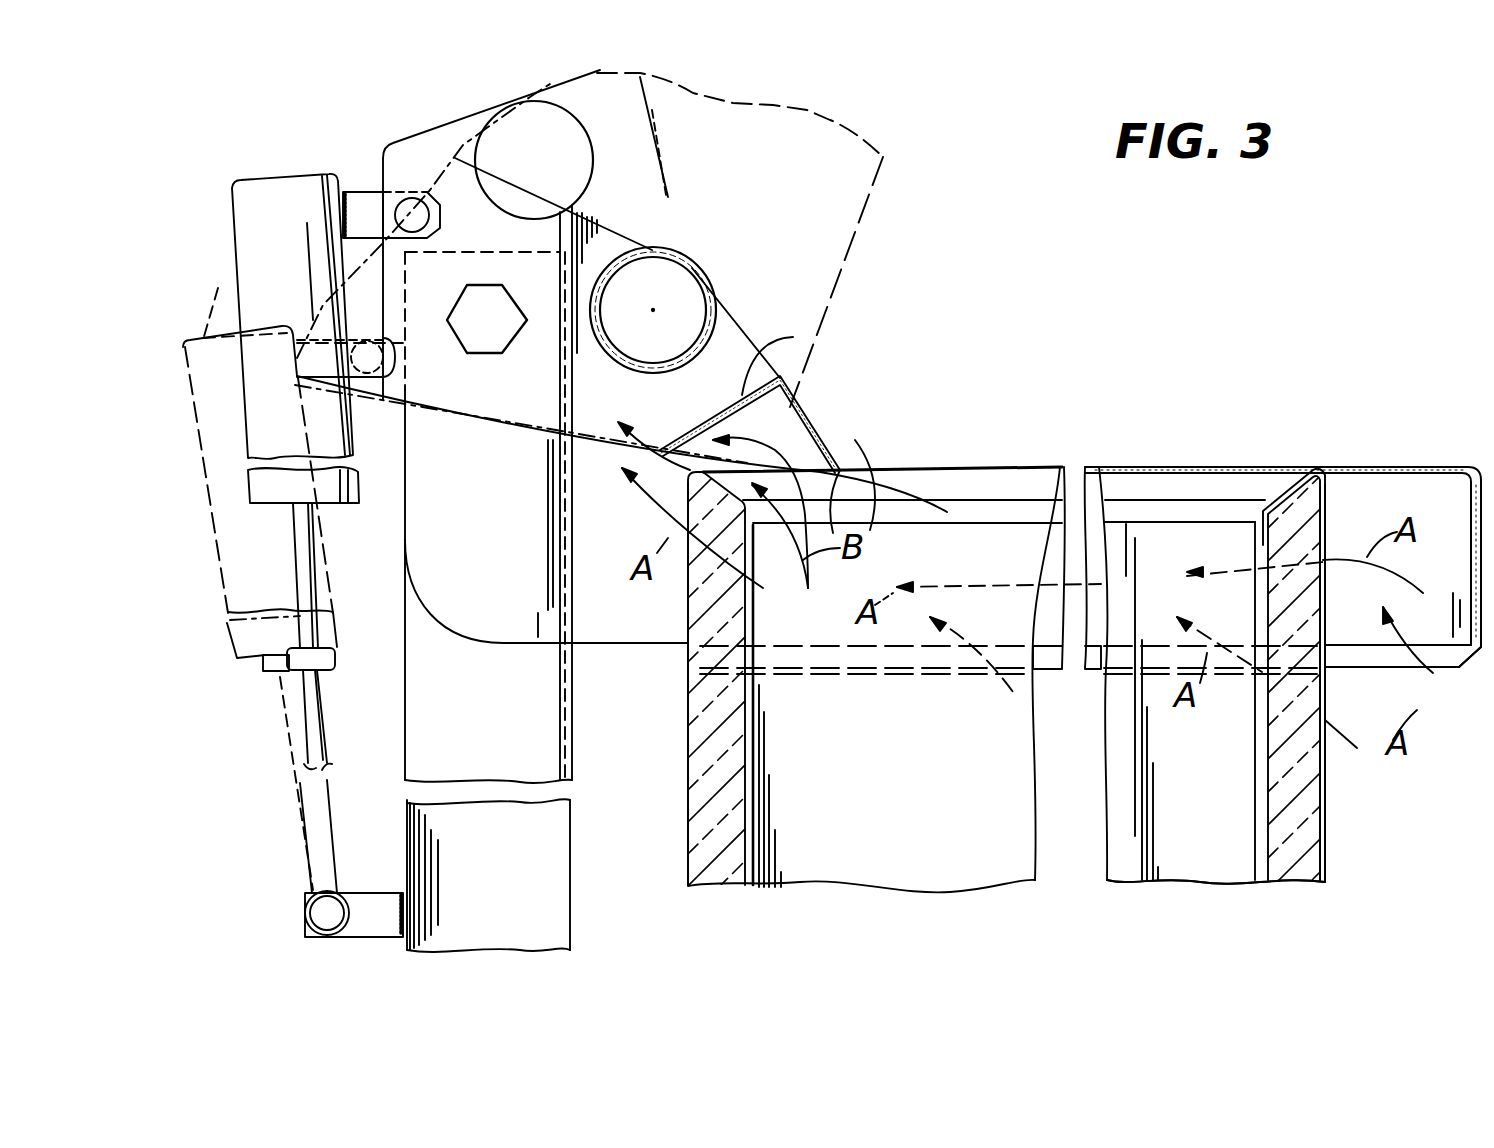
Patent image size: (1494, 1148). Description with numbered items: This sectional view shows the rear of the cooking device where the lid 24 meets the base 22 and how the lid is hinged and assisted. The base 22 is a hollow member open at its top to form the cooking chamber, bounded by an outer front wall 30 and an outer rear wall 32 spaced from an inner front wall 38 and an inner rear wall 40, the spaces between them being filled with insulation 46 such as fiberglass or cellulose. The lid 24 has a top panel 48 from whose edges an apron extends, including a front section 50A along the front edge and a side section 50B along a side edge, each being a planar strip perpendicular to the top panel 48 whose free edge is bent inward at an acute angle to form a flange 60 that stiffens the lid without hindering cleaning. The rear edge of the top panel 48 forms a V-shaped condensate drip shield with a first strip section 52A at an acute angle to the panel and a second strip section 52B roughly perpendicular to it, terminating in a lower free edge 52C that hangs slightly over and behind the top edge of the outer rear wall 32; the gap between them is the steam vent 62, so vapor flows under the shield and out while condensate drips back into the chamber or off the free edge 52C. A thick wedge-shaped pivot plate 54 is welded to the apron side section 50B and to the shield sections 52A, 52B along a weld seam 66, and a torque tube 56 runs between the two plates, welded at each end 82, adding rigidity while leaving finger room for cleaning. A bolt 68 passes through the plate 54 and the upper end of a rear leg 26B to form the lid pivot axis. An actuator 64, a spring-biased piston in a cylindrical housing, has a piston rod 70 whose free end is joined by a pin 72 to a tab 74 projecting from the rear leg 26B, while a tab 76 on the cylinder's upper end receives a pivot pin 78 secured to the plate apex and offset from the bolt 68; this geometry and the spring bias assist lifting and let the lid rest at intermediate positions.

The base 22 is at (1330, 858).
The lid 24 is at (1190, 462).
The rear leg 26B is at (545, 735).
The outer front wall 30 is at (1326, 822).
The outer rear wall 32 is at (688, 800).
The inner front wall 38 is at (1262, 718).
The inner rear wall 40 is at (758, 758).
The insulation 46 is at (733, 830).
The top panel 48 is at (1000, 463).
The front section of apron 50A is at (1470, 530).
The side section of apron 50B is at (1322, 688).
The first strip section 52A is at (823, 435).
The second strip section 52B is at (705, 88).
The lower free edge 52C is at (647, 447).
The pivot plate 54 is at (858, 187).
The torque tube 56 is at (555, 103).
The flange 60 is at (888, 675).
The steam vent 62 is at (665, 475).
The actuator 64 is at (253, 248).
The weld seam 66 is at (660, 445).
The bolt 68 is at (487, 340).
The piston rod 70 is at (310, 693).
The pin 72 is at (313, 910).
The tab 74 is at (362, 923).
The tab 76 is at (358, 200).
The pivot pin 78 is at (410, 200).
The torque tube end 82 is at (727, 300).